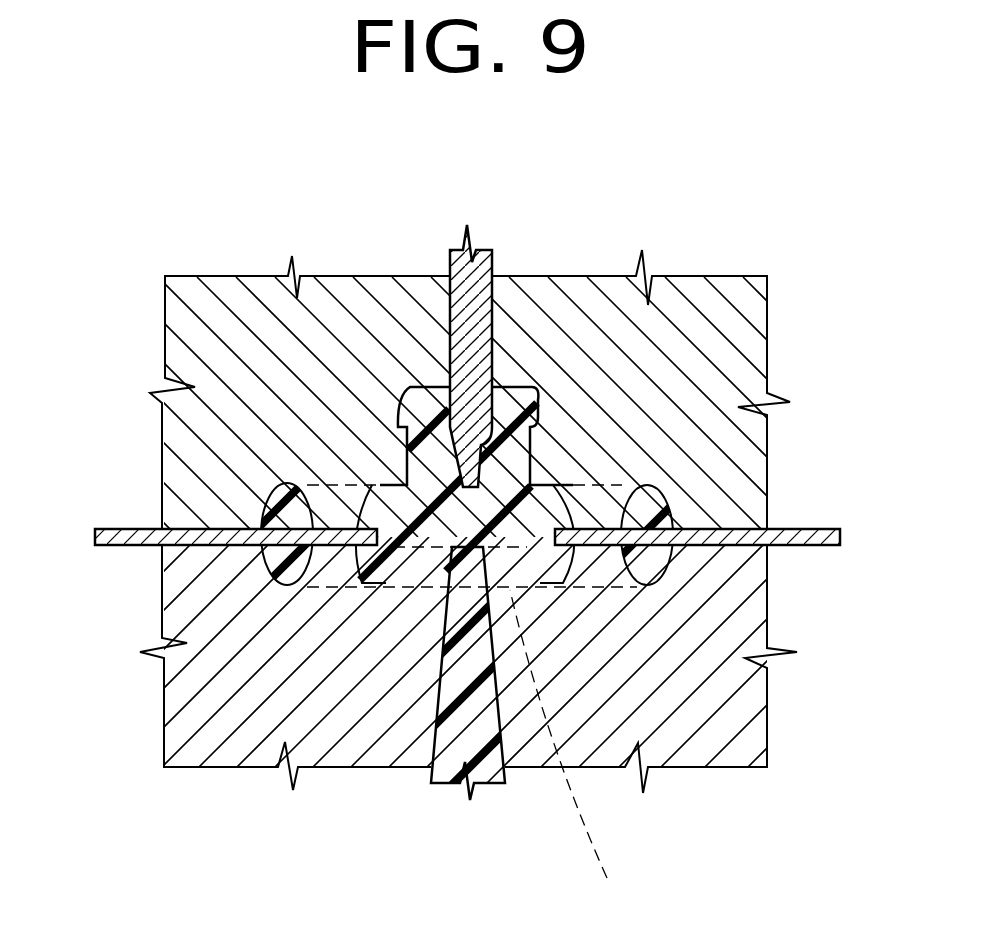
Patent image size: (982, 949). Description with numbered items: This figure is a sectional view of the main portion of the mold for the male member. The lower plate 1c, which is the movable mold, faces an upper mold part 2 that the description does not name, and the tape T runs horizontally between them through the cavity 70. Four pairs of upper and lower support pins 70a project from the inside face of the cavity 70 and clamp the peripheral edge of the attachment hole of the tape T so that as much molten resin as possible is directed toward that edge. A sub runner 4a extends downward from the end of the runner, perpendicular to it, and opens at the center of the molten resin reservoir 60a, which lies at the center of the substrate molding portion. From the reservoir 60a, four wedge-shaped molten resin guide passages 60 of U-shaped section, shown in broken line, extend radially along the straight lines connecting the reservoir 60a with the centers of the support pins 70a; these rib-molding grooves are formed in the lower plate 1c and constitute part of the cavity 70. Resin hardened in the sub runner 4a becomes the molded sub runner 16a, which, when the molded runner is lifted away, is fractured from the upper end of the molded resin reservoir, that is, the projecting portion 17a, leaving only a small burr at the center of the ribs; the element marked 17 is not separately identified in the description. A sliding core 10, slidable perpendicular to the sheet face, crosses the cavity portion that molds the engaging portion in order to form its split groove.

The lower plate 1c is at (712, 740).
The upper block 2 is at (718, 347).
The sliding core 10 is at (492, 258).
The molded sub runner 16a is at (458, 720).
The guide member 17 is at (485, 560).
The projecting portion 17a is at (427, 437).
The sub runner 4a is at (480, 740).
The molten resin guide passages 60 is at (440, 587).
The resin reservoir 60a is at (571, 757).
The cavity 70 is at (268, 585).
The support pins 70a is at (270, 477).
The tape T is at (800, 550).